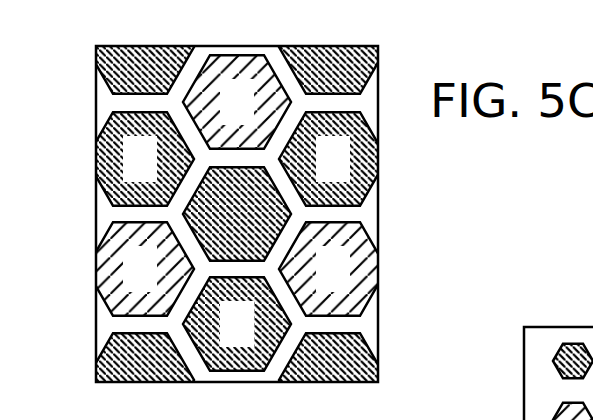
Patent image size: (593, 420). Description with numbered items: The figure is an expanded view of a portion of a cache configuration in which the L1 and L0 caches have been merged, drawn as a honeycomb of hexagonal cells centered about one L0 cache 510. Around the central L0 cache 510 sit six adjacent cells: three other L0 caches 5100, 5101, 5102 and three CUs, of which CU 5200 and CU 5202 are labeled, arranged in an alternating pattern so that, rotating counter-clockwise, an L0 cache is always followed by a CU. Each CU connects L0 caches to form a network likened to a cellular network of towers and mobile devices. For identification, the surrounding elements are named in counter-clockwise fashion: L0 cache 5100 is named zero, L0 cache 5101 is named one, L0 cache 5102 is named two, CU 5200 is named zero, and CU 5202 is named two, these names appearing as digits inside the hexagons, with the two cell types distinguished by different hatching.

The L0 cache 510 is at (237, 214).
The L0 cache 5100 is at (97, 160).
The L0 cache 5101 is at (253, 362).
The L0 cache 5102 is at (378, 153).
The CU 5200 is at (58, 268).
The CU 5202 is at (378, 265).